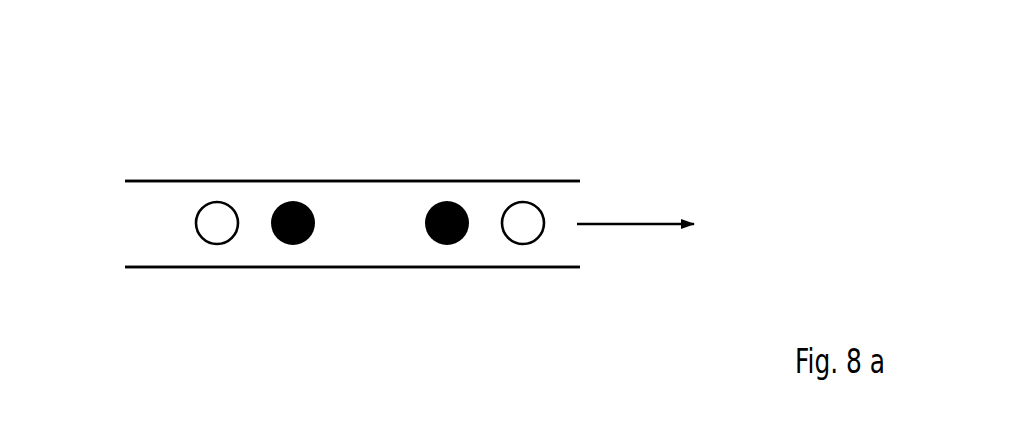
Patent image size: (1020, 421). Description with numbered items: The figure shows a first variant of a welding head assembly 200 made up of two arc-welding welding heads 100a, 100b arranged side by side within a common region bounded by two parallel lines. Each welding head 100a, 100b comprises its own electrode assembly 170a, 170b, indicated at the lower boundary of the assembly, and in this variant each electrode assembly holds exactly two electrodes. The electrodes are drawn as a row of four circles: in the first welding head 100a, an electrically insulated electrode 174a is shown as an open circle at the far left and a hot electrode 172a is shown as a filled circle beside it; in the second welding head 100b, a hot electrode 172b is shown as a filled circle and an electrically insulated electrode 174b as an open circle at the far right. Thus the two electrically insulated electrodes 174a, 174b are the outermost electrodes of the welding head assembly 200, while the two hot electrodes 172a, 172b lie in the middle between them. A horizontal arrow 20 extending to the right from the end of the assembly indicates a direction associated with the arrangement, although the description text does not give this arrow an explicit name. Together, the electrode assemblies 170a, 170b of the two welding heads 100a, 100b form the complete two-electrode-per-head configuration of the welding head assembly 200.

The welding head assembly 200 is at (545, 112).
The welding head 100a is at (251, 160).
The welding head 100b is at (481, 160).
The electrode assembly 170a is at (164, 281).
The electrode assembly 170b is at (568, 283).
The hot electrode 172a is at (293, 245).
The hot electrode 172b is at (447, 245).
The electrically insulated electrode 174a is at (217, 237).
The electrically insulated electrode 174b is at (523, 237).
The flow direction 20 is at (637, 222).